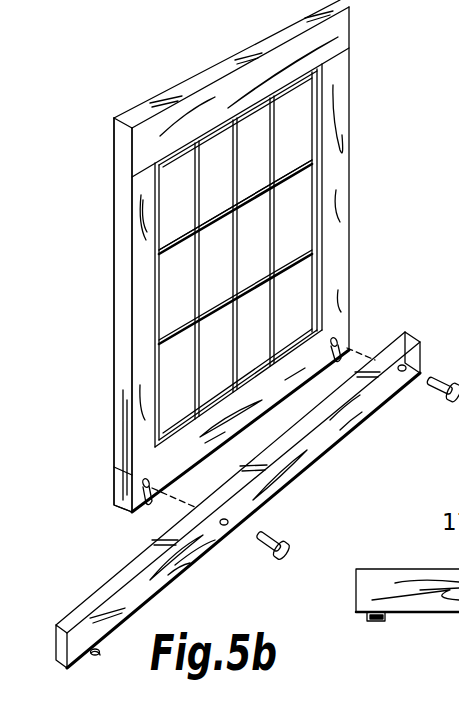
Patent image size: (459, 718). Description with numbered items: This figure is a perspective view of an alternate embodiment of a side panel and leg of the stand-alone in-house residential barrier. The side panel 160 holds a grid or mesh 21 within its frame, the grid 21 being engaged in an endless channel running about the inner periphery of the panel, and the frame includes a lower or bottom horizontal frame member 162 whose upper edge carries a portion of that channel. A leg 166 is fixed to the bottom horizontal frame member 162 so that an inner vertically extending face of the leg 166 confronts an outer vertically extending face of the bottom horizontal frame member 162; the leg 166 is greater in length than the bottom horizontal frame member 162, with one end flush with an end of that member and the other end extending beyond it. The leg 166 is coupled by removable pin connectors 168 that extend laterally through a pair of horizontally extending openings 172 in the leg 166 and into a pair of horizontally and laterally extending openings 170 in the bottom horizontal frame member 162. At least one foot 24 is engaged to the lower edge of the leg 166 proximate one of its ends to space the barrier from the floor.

The side panel 160 is at (351, 148).
The grid or mesh 21 is at (178, 243).
The bottom horizontal frame member 162 is at (113, 486).
The leg 166 is at (395, 341).
The pin connectors 168 is at (434, 396).
The openings 170 is at (144, 487).
The openings 172 is at (229, 521).
The foot 24 is at (100, 657).